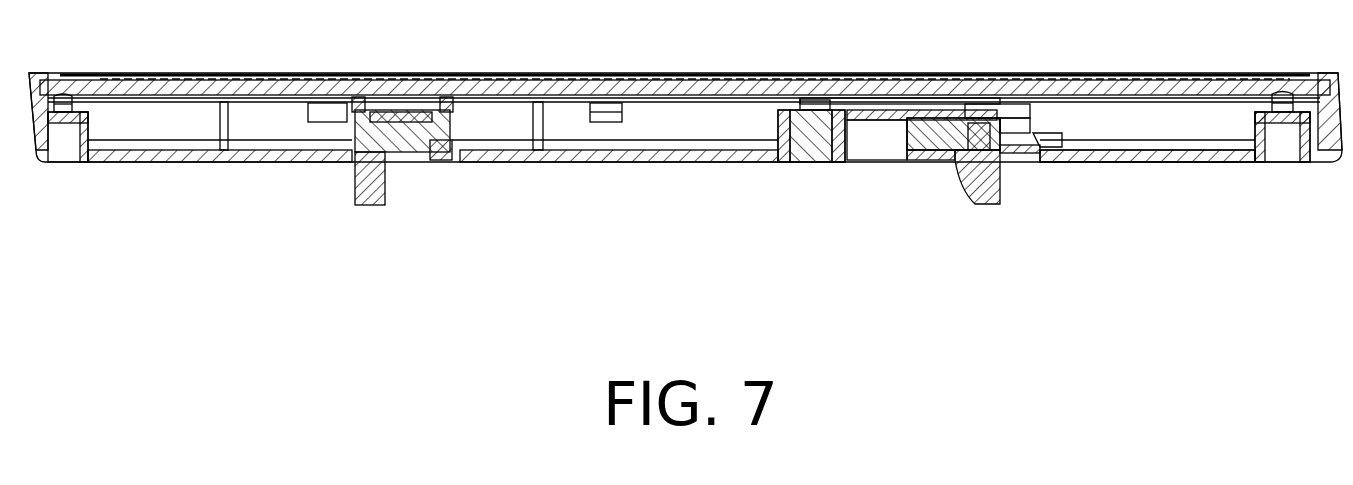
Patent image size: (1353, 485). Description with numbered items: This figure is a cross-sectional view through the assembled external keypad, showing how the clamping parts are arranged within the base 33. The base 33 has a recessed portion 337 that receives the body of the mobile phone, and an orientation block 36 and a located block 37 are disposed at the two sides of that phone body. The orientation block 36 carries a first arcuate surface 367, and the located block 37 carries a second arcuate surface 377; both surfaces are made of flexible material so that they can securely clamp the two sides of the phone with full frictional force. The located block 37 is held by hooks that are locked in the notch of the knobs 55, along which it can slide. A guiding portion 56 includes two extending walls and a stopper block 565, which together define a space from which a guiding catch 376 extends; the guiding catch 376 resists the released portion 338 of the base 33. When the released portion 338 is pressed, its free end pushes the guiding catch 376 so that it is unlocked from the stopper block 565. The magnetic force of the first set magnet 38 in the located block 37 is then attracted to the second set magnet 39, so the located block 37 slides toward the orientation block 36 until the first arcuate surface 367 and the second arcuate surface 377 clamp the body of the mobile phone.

The base 33 is at (1217, 165).
The recessed portion 337 is at (630, 160).
The released portion 338 is at (1072, 162).
The orientation block 36 is at (403, 145).
The first arcuate surface 367 is at (383, 178).
The first set magnet 38 is at (812, 130).
The second set magnet 39 is at (962, 143).
The second arcuate surface 377 is at (962, 165).
The located block 37 is at (985, 165).
The stopper block 565 is at (1030, 160).
The knob 55 is at (937, 103).
The guiding portion 56 is at (1015, 127).
The guiding catch 376 is at (1040, 147).